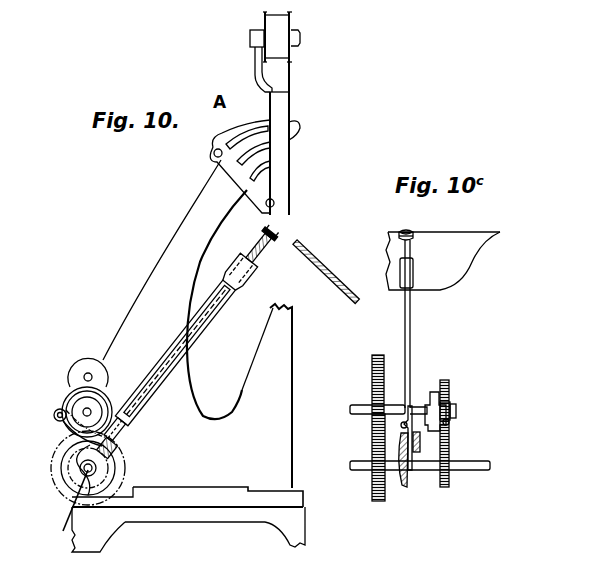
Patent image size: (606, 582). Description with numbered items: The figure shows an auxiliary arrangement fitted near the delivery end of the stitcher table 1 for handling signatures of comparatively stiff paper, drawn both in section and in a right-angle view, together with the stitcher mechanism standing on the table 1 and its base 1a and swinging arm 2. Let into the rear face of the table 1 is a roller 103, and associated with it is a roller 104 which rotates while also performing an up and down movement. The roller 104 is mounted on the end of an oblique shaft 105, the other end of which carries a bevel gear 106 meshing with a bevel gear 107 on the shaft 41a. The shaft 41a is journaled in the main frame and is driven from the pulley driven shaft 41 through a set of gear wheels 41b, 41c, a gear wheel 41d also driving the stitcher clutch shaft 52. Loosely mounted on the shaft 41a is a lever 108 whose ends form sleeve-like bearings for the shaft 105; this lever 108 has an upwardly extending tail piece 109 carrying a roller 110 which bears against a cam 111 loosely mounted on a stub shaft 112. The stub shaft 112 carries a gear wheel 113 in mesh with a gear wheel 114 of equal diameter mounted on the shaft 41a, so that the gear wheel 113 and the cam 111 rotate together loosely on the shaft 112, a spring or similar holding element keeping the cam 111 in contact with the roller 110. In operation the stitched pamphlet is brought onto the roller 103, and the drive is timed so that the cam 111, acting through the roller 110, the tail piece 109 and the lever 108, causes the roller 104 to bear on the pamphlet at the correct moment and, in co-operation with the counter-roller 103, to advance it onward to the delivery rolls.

In FIG. 10C, the stitcher table 1 is at (456, 262).
In FIG. 10, the base 1a is at (276, 496).
In FIG. 10, the swinging arm 2 is at (170, 254).
In FIG. 10, the pulley driven shaft 41 is at (89, 419).
In FIG. 10, the shaft 41a is at (64, 511).
In FIG. 10C, the gear wheel 41b is at (405, 424).
In FIG. 10C, the gear wheel 41c is at (376, 474).
In FIG. 10C, the gear wheel 41d is at (379, 354).
In FIG. 10, the stitcher clutch shaft 52 is at (82, 372).
In FIG. 10, the roller 103 is at (283, 257).
In FIG. 10, the roller 104 is at (275, 236).
In FIG. 10C, the roller 104 is at (399, 232).
In FIG. 10, the oblique shaft 105 is at (208, 333).
In FIG. 10C, the oblique shaft 105 is at (409, 246).
In FIG. 10, the bevel gear 106 is at (118, 451).
In FIG. 10C, the bevel gear 106 is at (419, 446).
In FIG. 10, the bevel gear 107 is at (73, 495).
In FIG. 10C, the bevel gear 107 is at (403, 488).
In FIG. 10, the lever 108 is at (169, 398).
In FIG. 10C, the lever 108 is at (411, 327).
In FIG. 10, the tail piece 109 is at (54, 415).
In FIG. 10C, the tail piece 109 is at (401, 427).
In FIG. 10, the roller 110 is at (65, 408).
In FIG. 10C, the roller 110 is at (449, 423).
In FIG. 10, the cam 111 is at (97, 412).
In FIG. 10C, the cam 111 is at (434, 391).
In FIG. 10, the stub shaft 112 is at (56, 470).
In FIG. 10C, the stub shaft 112 is at (395, 409).
In FIG. 10C, the gear wheel 113 is at (449, 386).
In FIG. 10C, the gear wheel 114 is at (448, 462).